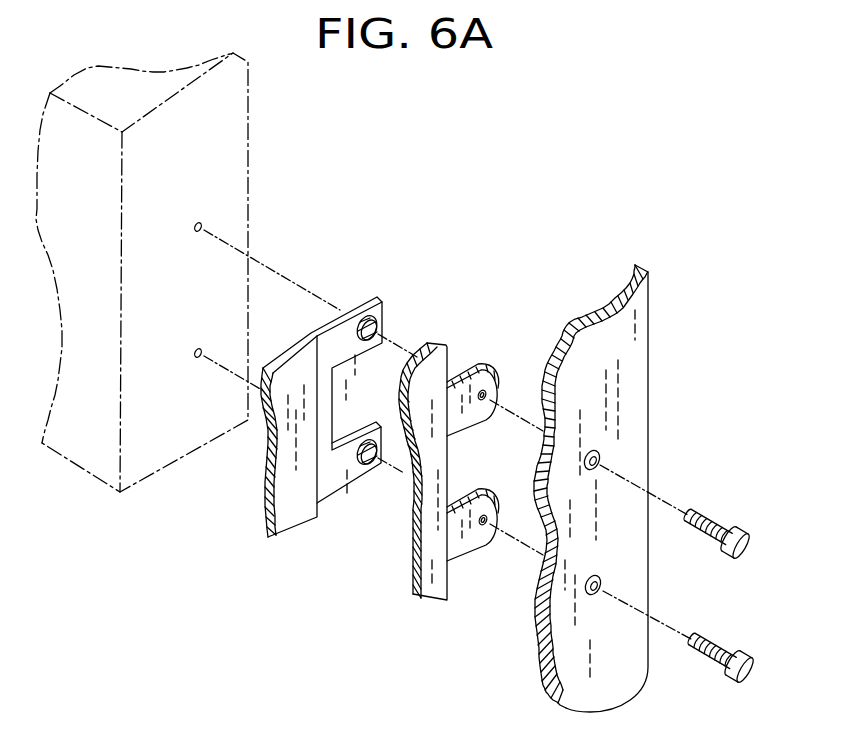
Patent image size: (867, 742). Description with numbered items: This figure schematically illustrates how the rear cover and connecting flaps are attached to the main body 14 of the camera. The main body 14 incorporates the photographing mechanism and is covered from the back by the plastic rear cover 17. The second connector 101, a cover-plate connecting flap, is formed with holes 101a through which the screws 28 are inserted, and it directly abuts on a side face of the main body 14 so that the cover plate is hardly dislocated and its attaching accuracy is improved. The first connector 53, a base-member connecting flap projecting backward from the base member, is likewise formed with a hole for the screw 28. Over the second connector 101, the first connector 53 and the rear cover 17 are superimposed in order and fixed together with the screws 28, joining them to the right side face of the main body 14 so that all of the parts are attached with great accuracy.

The main body 14 is at (276, 162).
The second connector 101 is at (355, 280).
The holes 101a is at (383, 320).
The first connector 53 is at (390, 583).
The rear cover 17 is at (676, 320).
The screw 28 is at (712, 517).